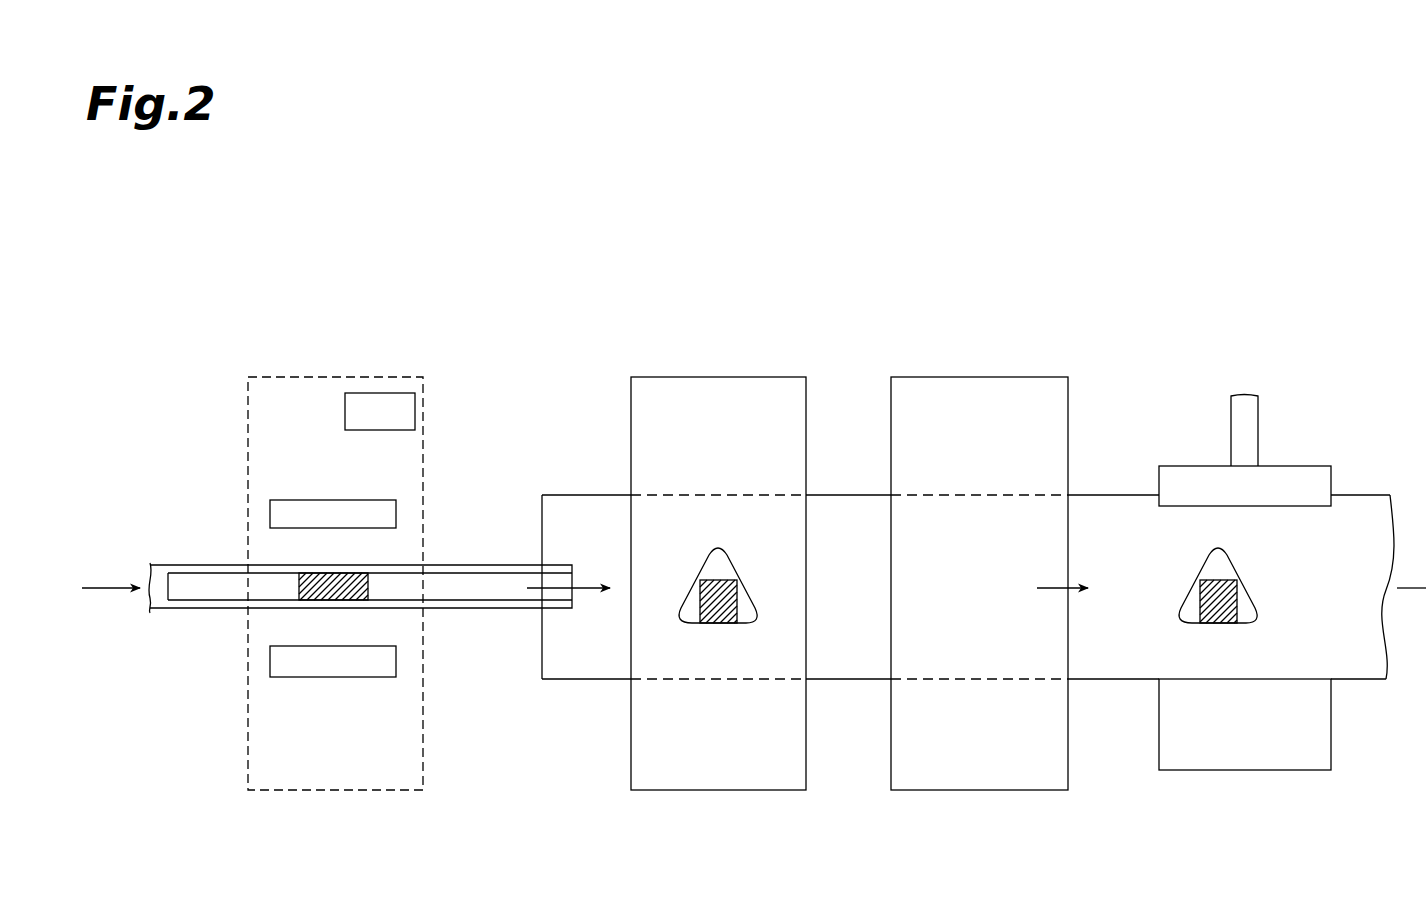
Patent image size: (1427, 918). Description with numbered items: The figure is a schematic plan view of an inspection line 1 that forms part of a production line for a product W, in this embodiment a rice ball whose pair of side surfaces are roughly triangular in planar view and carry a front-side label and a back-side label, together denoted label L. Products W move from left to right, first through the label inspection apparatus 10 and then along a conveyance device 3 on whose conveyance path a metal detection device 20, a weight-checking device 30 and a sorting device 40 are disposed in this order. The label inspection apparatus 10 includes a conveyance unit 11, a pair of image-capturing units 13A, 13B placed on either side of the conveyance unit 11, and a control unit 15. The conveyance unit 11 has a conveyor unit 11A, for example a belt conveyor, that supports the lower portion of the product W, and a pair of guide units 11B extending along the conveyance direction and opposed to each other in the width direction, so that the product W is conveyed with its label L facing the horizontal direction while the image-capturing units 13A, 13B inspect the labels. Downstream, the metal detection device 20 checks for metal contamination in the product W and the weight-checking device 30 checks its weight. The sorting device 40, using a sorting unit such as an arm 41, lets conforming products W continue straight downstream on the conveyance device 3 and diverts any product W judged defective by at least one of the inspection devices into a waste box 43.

The inspection line 1 is at (1308, 257).
The conveyance device 3 is at (577, 667).
The label inspection apparatus 10 is at (300, 373).
The conveyance unit 11 is at (115, 484).
The conveyor unit 11A is at (223, 583).
The guide unit 11B is at (170, 600).
The image-capturing unit 13A is at (370, 680).
The image-capturing unit 13B is at (297, 500).
The control unit 15 is at (393, 393).
The metal detection device 20 is at (762, 373).
The weight-checking device 30 is at (1008, 373).
The sorting device 40 is at (1243, 380).
The arm 41 is at (1311, 466).
The waste box 43 is at (1312, 732).
The product W is at (353, 576).
The label L is at (714, 623).